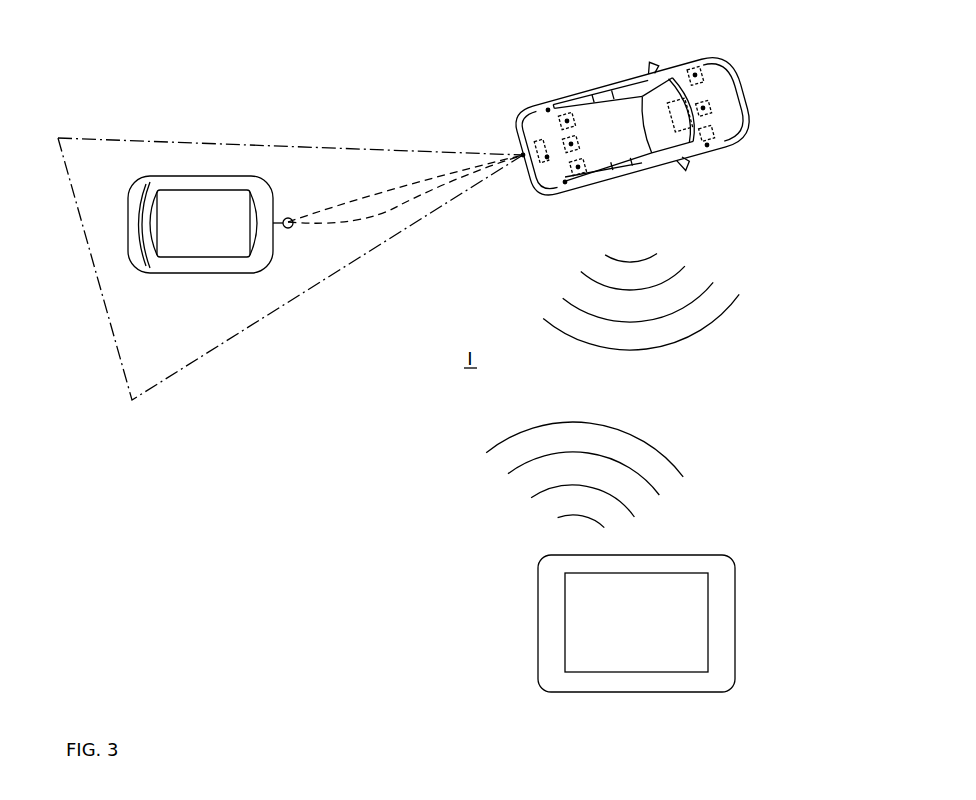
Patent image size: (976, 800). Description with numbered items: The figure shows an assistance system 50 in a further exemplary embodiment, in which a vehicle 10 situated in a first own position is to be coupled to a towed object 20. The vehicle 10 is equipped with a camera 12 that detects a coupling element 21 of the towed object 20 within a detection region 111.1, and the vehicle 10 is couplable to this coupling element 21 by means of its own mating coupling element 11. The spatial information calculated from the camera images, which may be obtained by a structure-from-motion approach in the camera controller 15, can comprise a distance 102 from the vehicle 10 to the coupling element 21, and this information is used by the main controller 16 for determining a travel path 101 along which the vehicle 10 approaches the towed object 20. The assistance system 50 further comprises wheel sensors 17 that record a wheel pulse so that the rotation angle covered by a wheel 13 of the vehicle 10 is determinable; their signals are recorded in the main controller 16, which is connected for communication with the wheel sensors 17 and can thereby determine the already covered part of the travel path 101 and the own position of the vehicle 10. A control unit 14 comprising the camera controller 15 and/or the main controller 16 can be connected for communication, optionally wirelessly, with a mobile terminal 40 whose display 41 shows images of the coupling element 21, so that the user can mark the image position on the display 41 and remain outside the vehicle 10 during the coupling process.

The vehicle 10 is at (734, 37).
The mating coupling element 11 is at (523, 155).
The camera 12 is at (543, 182).
The wheel 13 is at (548, 110).
The control unit 14 is at (733, 89).
The camera controller 15 is at (577, 148).
The main controller 16 is at (703, 108).
The wheel sensors 17 is at (567, 121).
The towed object 20 is at (182, 292).
The coupling element 21 is at (288, 223).
The mobile terminal 40 is at (516, 584).
The display 41 is at (580, 652).
The assistance system 50 is at (297, 474).
The travel path 101 is at (373, 218).
The distance 102 is at (420, 185).
The detection region 111.1 is at (183, 143).